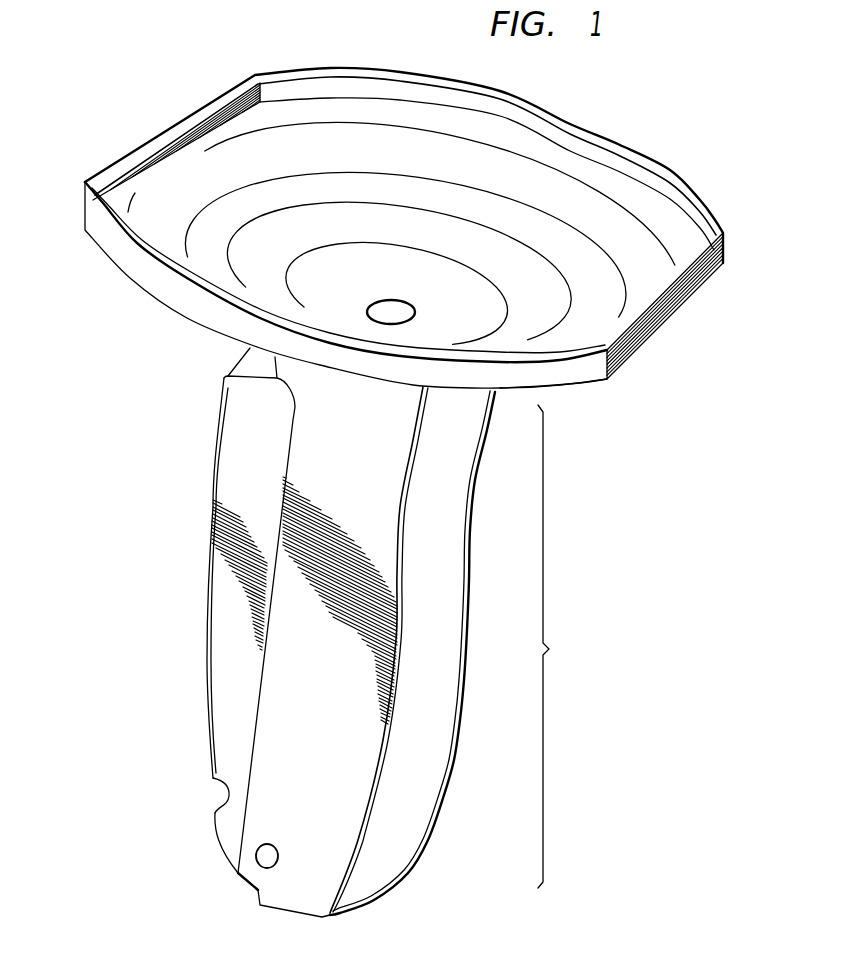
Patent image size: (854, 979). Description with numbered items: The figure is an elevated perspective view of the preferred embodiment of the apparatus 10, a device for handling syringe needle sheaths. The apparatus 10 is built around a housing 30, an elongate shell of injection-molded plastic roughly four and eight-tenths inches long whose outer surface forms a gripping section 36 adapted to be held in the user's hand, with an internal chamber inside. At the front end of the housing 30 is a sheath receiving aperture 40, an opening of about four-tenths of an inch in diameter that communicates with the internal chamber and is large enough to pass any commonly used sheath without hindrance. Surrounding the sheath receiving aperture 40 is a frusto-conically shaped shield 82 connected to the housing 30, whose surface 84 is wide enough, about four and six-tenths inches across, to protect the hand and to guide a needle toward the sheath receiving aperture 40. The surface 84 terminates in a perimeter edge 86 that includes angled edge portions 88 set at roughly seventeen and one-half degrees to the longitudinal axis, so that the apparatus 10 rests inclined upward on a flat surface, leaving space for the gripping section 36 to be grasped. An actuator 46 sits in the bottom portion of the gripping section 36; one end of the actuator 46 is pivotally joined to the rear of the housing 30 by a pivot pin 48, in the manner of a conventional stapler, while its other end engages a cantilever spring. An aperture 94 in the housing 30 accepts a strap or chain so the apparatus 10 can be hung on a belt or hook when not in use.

The apparatus 10 is at (99, 568).
The housing 30 is at (335, 684).
The gripping section 36 is at (561, 646).
The sheath receiving aperture 40 is at (384, 303).
The actuator 46 is at (263, 477).
The pivot pin 48 is at (257, 857).
The shield 82 is at (703, 352).
The surface 84 is at (600, 232).
The perimeter edge 86 is at (645, 368).
The angled edge portions 88 is at (172, 130).
The aperture 94 is at (214, 783).